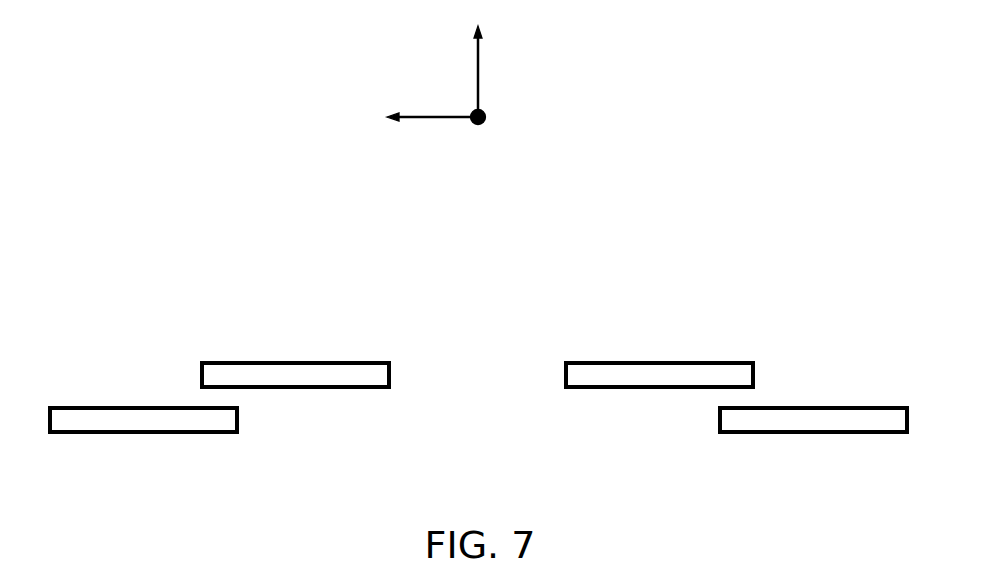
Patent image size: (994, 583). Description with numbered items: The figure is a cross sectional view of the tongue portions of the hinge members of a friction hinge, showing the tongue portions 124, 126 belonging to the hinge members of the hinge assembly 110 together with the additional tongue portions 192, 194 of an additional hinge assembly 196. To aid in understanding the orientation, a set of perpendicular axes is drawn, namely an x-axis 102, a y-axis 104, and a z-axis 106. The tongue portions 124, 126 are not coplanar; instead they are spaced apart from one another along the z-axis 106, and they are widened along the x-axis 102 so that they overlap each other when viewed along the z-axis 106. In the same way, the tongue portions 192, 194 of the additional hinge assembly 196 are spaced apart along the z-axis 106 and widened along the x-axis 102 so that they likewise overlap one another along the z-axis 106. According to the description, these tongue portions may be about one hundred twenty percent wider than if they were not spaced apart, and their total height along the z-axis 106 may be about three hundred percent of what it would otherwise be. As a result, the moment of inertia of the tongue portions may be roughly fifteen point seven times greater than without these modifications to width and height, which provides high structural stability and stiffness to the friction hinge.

The x-axis 102 is at (431, 110).
The y-axis 104 is at (487, 117).
The z-axis 106 is at (480, 57).
The hinge assembly 110 is at (193, 307).
The tongue portion 124 is at (293, 361).
The tongue portion 126 is at (145, 433).
The additional tongue portion 192 is at (663, 361).
The additional tongue portion 194 is at (830, 433).
The additional hinge assembly 196 is at (763, 307).